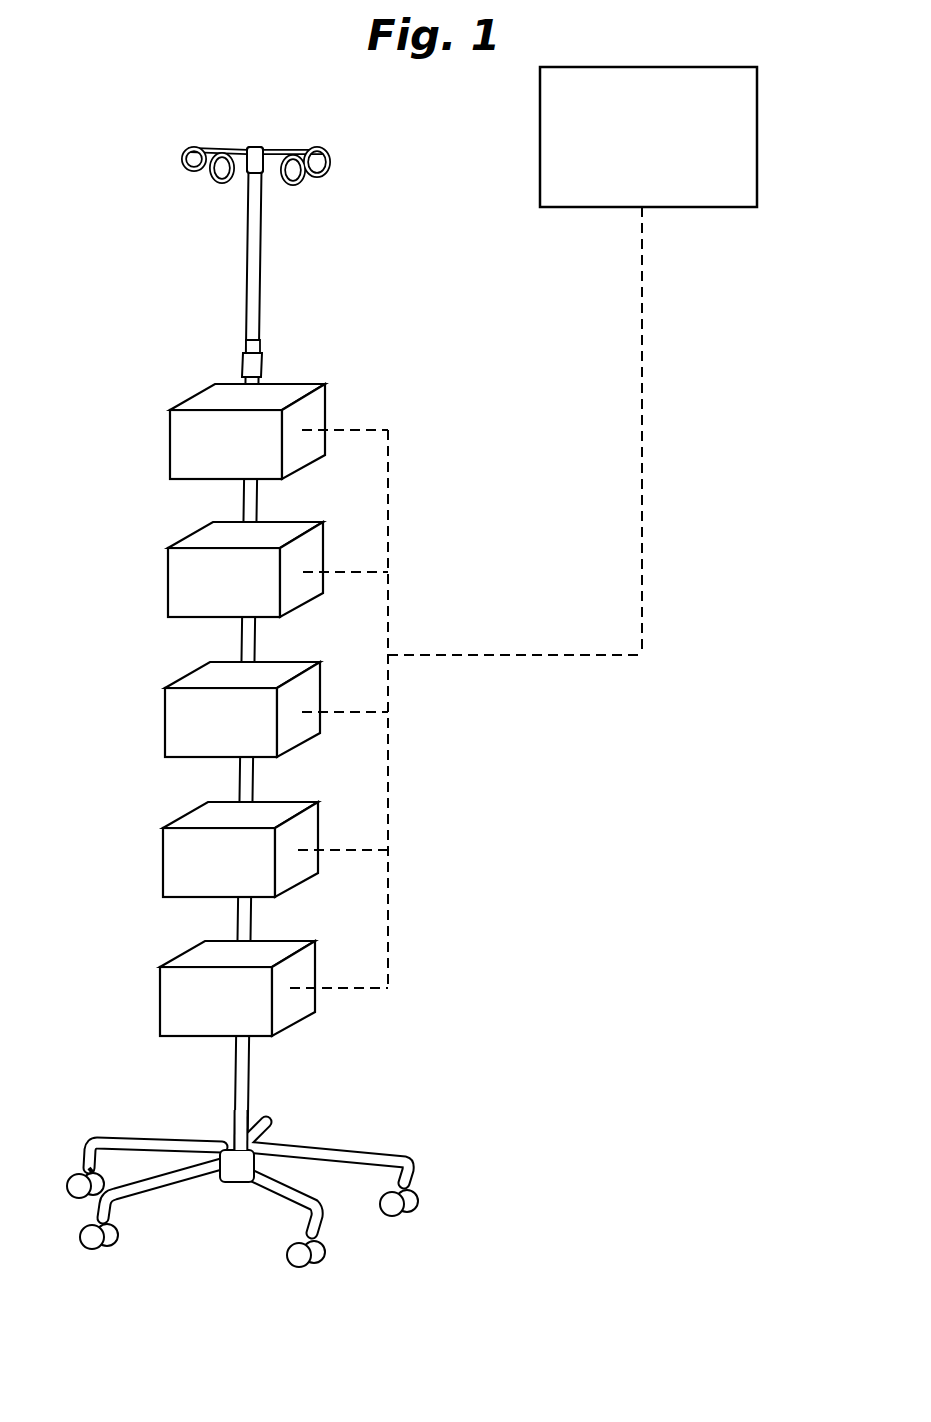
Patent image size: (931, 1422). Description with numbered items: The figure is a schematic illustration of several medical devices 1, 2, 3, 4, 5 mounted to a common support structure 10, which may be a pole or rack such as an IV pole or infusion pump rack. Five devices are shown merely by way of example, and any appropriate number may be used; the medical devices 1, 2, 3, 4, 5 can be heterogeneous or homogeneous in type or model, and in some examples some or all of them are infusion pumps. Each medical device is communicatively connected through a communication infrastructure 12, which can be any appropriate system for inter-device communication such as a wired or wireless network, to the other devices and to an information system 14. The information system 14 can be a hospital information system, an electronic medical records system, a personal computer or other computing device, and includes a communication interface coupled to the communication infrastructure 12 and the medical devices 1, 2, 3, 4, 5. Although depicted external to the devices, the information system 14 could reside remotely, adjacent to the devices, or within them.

The medical device 1 is at (180, 445).
The medical device 2 is at (180, 592).
The medical device 3 is at (176, 725).
The medical device 4 is at (178, 868).
The medical device 5 is at (172, 1000).
The common support structure 10 is at (241, 1075).
The communication infrastructure 12 is at (388, 757).
The information system 14 is at (757, 97).